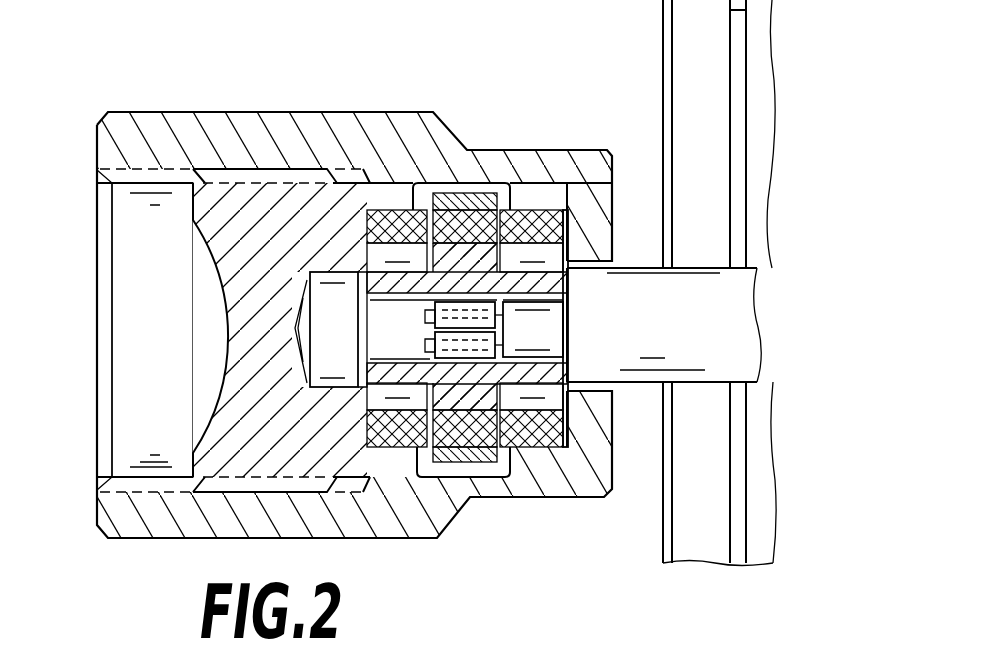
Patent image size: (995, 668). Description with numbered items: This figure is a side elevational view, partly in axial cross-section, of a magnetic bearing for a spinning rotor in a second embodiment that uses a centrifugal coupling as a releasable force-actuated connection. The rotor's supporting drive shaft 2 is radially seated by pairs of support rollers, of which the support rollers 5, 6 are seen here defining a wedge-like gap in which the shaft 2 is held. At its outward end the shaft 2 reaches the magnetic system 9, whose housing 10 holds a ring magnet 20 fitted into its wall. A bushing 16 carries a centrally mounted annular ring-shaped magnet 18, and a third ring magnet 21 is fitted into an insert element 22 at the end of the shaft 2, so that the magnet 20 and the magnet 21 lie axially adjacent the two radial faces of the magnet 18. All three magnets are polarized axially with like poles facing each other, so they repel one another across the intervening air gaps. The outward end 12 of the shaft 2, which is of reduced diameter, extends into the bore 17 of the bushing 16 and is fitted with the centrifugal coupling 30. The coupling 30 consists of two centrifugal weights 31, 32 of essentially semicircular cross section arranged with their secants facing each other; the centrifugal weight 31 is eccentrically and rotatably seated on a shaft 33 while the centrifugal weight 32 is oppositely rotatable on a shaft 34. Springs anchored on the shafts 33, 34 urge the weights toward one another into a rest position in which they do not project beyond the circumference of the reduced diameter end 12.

The drive shaft 2 is at (637, 280).
The support roller 5 is at (708, 547).
The support roller 6 is at (753, 281).
The magnetic system 9 is at (407, 81).
The housing 10 is at (100, 527).
The outward end of the shaft 12 is at (568, 447).
The bushing 16 is at (453, 390).
The bore 17 is at (370, 300).
The ring-shaped magnet 18 is at (505, 447).
The ring magnet 20 is at (553, 448).
The ring magnet 21 is at (393, 430).
The insert element 22 is at (228, 455).
The centrifugal coupling 30 is at (386, 340).
The centrifugal weight 31 is at (427, 305).
The centrifugal weight 32 is at (497, 352).
The shaft 33 is at (383, 338).
The shaft 34 is at (427, 343).